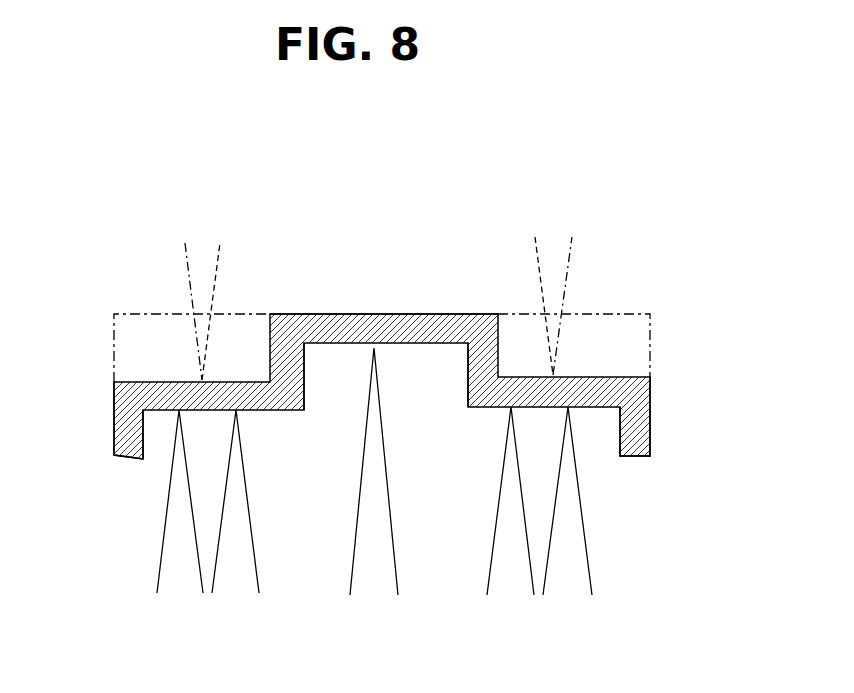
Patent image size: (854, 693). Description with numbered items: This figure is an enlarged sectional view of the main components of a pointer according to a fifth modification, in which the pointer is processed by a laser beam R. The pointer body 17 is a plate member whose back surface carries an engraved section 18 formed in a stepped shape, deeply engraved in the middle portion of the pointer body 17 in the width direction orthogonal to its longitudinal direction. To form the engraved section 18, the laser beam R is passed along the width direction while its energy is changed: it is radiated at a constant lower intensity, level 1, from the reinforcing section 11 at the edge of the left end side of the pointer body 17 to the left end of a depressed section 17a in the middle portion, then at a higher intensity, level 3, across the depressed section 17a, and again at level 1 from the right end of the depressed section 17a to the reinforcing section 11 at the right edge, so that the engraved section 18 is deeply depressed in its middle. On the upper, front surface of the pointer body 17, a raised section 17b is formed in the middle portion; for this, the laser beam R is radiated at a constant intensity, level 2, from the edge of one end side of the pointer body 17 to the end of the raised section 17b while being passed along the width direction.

The level 1 is at (374, 515).
The level 2 is at (378, 299).
The level 3 is at (374, 485).
The reinforcing section 11 is at (125, 431).
The pointer body 17 is at (345, 304).
The depressed section 17a is at (443, 360).
The raised section 17b is at (413, 322).
The engraved section 18 is at (332, 425).
The laser beam R is at (188, 266).